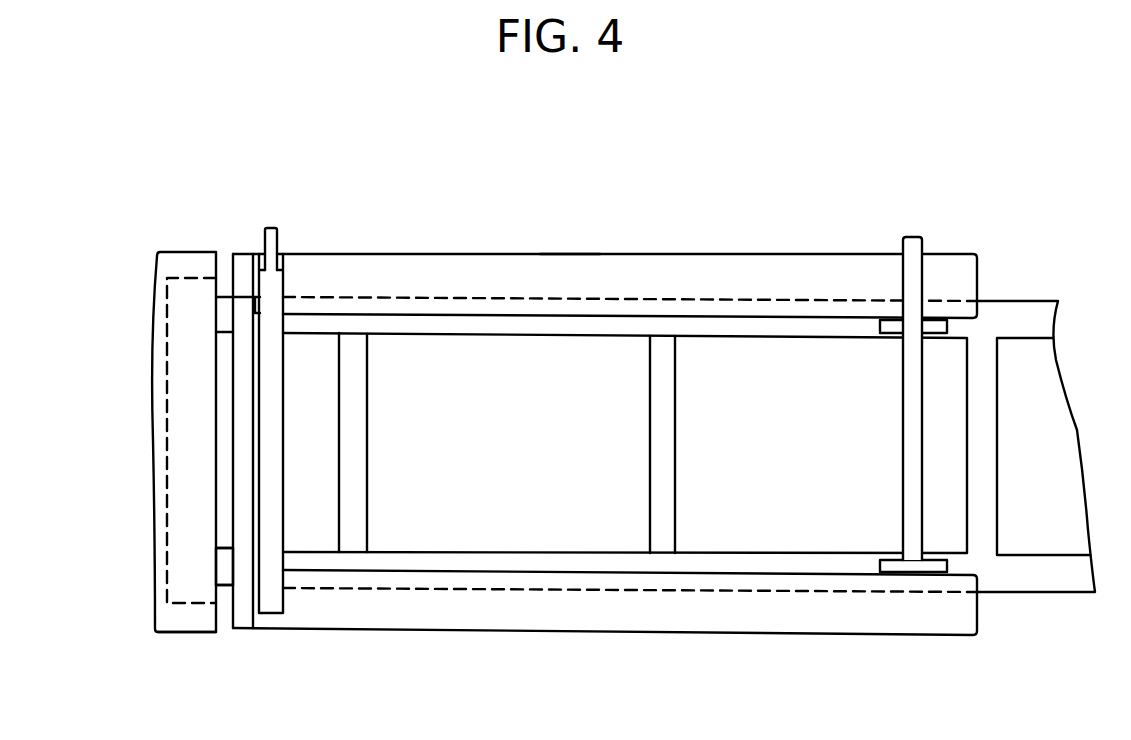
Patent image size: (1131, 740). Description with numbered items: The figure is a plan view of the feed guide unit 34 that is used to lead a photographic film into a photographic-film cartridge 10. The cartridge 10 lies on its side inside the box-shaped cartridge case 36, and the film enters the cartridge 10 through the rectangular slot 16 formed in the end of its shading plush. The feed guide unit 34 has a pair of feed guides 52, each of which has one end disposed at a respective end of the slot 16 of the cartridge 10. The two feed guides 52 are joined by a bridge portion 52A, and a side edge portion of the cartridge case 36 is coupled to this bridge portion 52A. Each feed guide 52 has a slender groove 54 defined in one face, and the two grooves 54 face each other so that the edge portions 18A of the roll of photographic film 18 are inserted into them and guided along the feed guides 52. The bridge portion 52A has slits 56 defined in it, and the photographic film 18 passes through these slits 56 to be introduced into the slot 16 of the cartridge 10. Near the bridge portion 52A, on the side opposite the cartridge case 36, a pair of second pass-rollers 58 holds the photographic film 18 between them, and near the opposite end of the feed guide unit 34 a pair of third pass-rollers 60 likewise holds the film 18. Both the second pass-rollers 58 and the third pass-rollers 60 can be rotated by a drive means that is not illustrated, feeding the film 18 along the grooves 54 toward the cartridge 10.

The photographic-film cartridge 10 is at (195, 266).
The slot 16 is at (220, 346).
The photographic film 18 is at (785, 376).
The edge portions of photographic film 18A is at (990, 311).
The feed guide unit 34 is at (567, 228).
The cartridge case 36 is at (186, 633).
The feed guides 52 is at (464, 268).
The bridge portion 52A is at (243, 405).
The slender grooves 54 is at (686, 298).
The slits 56 is at (243, 560).
The second pass-rollers 58 is at (278, 478).
The third pass-rollers 60 is at (901, 450).